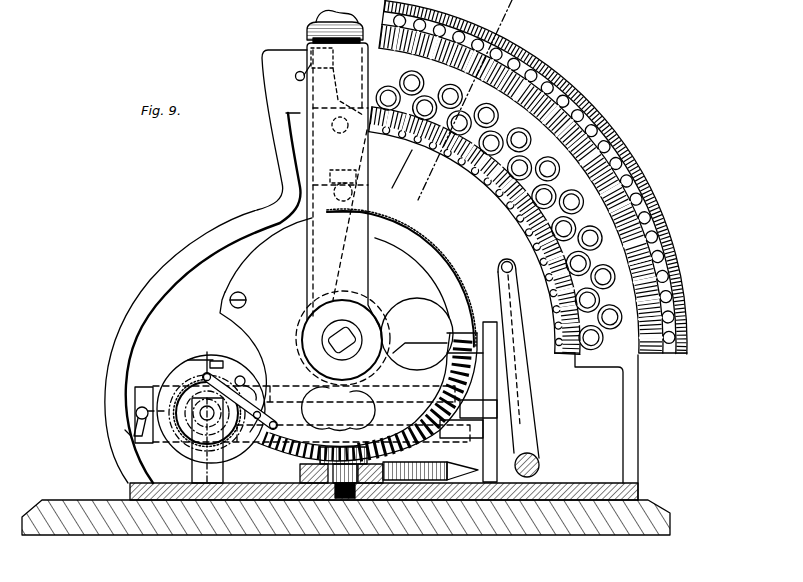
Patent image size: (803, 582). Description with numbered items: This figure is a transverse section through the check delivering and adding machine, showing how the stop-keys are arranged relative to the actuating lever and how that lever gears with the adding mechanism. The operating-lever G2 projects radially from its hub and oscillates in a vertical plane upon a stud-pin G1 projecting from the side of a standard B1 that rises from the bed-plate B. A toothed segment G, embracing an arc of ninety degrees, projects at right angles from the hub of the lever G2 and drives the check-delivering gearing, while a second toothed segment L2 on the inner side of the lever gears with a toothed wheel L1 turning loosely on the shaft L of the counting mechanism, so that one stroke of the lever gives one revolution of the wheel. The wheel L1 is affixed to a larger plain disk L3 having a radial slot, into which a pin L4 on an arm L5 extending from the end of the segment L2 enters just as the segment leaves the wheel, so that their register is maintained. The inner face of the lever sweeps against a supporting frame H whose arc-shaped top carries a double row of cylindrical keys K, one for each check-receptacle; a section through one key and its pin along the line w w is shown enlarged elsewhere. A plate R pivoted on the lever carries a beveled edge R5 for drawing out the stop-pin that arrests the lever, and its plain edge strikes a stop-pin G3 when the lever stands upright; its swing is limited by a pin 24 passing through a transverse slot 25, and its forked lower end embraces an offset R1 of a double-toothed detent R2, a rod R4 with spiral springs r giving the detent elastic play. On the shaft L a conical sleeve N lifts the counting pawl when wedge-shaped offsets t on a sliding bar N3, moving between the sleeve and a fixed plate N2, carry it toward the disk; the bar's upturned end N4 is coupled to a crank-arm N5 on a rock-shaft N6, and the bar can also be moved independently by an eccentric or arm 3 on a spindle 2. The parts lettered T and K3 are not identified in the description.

The bed-plate B is at (130, 485).
The supporting frame H is at (492, 198).
The cylindrical key K is at (462, 28).
The key tops T is at (498, 209).
The section line w w is at (465, 100).
The beveled edge R5 is at (344, 170).
The pivoted plate R is at (312, 140).
The pin 24 is at (333, 62).
The transverse slot 25 is at (340, 91).
The stop-pin G3 is at (296, 75).
The rod R4 is at (312, 185).
The spiral springs r is at (343, 176).
The double-toothed detent R2 is at (354, 209).
The offset R1 is at (394, 178).
The operating-lever G2 is at (343, 257).
The stud-pin G1 is at (342, 340).
The pedestal or standard B1 is at (336, 325).
The conical sleeve N is at (450, 258).
The toothed segment G is at (430, 428).
The toothed segment L2 is at (306, 451).
The cylinder K3 is at (468, 454).
The sliding bar N3 is at (332, 402).
The upturned end N4 is at (498, 330).
The crank-arm N5 is at (524, 392).
The rock-shaft N6 is at (541, 467).
The lateral disk L3 is at (211, 409).
The counting shaft L is at (207, 413).
The toothed wheel L1 is at (183, 440).
The fixed plate N2 is at (302, 403).
The spindle 2 is at (136, 410).
The eccentric or arm 3 is at (130, 433).
The pin L4 is at (205, 358).
The arm L5 is at (222, 388).
The wedge-shaped offsets t is at (245, 460).